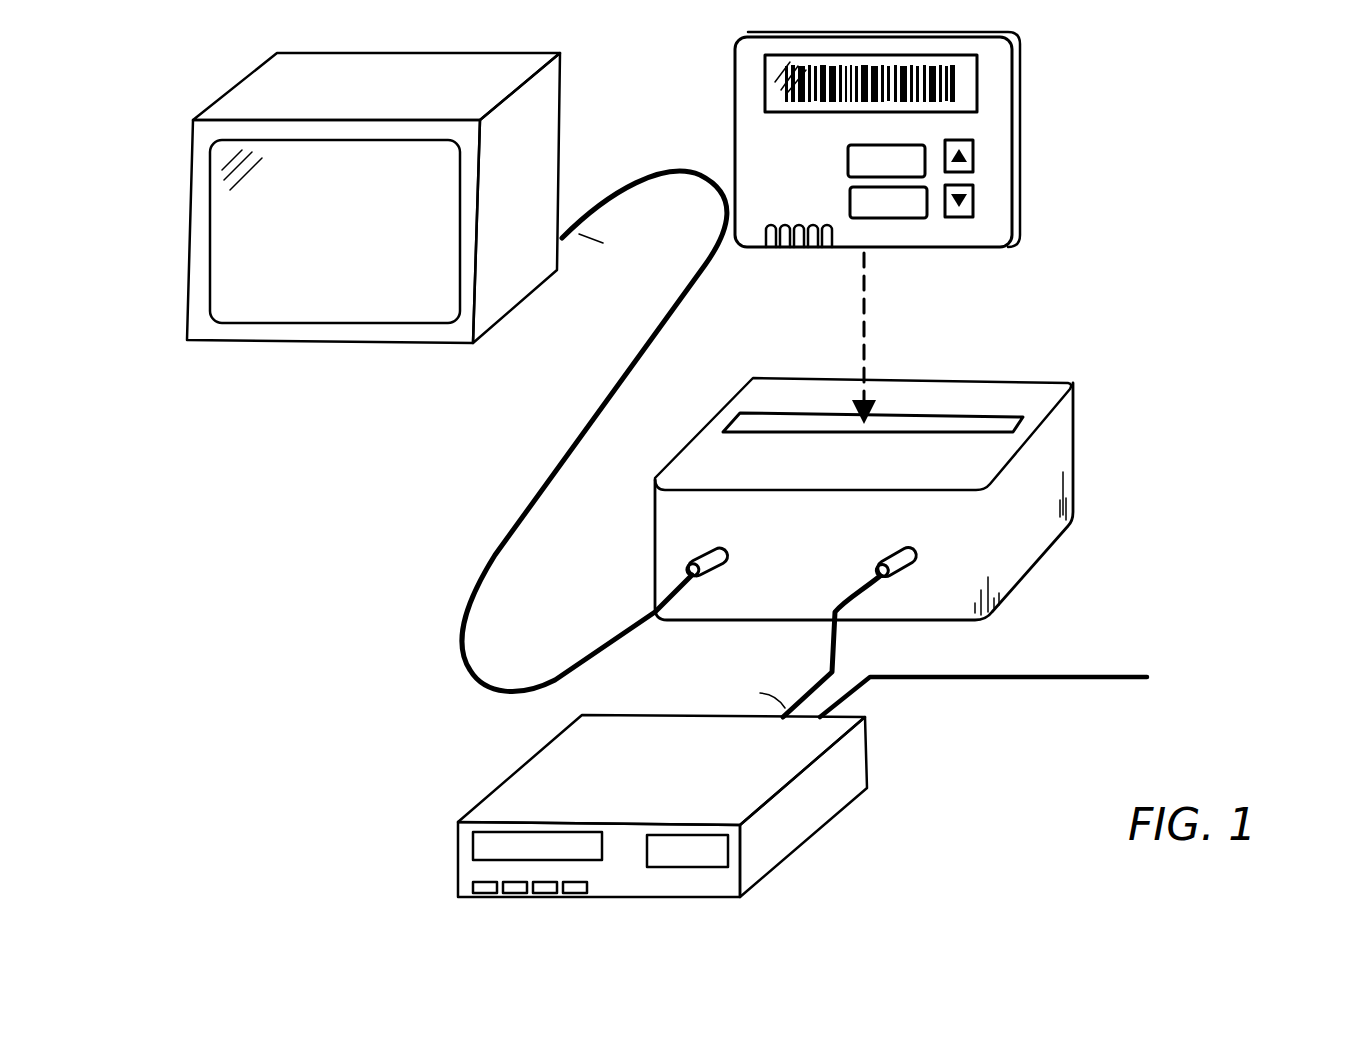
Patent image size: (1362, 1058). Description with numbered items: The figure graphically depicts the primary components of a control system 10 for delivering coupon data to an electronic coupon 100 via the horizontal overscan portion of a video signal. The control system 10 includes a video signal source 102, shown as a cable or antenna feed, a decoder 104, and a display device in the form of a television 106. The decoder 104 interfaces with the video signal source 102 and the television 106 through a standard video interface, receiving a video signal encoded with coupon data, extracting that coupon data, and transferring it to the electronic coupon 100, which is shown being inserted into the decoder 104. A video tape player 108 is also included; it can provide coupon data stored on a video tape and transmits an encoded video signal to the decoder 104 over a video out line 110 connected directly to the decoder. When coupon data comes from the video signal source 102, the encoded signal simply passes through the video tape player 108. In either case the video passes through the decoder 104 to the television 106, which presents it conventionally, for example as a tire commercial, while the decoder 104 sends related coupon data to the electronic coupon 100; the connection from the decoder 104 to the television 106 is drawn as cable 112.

The control system 10 is at (724, 478).
The electronic coupon 100 is at (999, 110).
The video signal source 102 is at (1003, 683).
The decoder 104 is at (1058, 443).
The television 106 is at (547, 100).
The video tape player 108 is at (550, 760).
The video out line 110 is at (823, 640).
The video output cable 112 is at (495, 519).